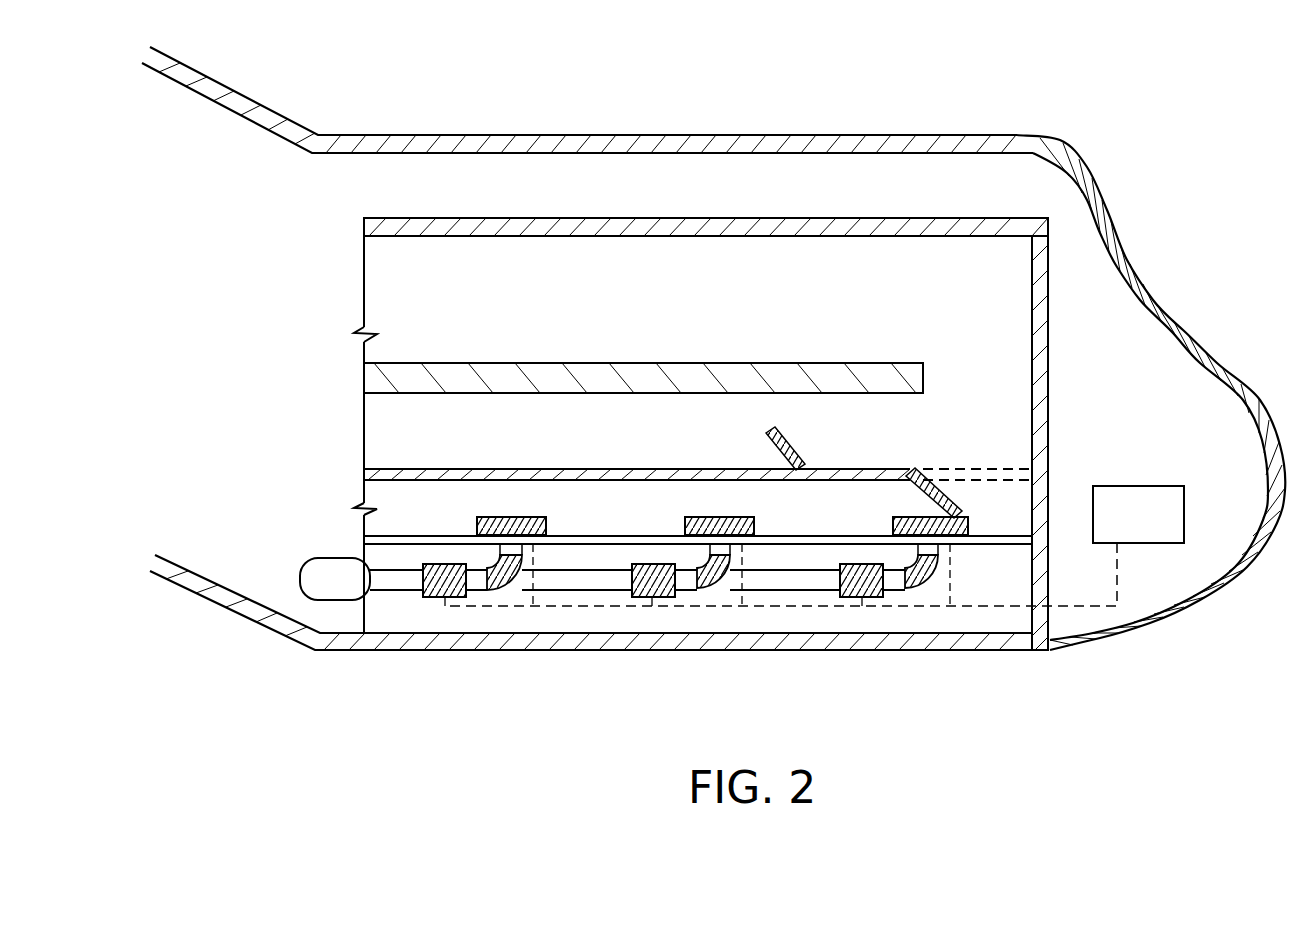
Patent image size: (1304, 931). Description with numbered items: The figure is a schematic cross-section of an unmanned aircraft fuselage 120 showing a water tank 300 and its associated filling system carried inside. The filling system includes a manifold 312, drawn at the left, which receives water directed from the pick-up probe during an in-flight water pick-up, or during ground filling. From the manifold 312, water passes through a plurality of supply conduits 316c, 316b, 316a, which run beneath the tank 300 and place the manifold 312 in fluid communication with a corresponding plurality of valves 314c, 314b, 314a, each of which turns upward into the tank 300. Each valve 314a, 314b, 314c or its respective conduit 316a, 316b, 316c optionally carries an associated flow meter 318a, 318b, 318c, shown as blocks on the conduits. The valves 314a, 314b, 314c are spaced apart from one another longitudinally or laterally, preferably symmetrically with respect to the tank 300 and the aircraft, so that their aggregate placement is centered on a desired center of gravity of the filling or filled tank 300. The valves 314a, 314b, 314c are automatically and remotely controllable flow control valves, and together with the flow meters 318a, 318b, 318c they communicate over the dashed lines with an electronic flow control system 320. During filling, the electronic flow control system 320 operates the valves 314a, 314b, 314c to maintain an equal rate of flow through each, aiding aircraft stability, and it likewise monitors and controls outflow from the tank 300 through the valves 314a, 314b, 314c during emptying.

The fuselage 120 is at (752, 135).
The water tank 300 is at (633, 218).
The manifold 312 is at (318, 593).
The valve 314a is at (925, 517).
The valve 314b is at (718, 517).
The valve 314c is at (518, 517).
The conduit 316a is at (797, 592).
The conduit 316b is at (591, 592).
The conduit 316c is at (390, 592).
The flow meter 318a is at (862, 564).
The flow meter 318b is at (655, 564).
The flow meter 318c is at (455, 564).
The electronic flow control system 320 is at (1118, 534).